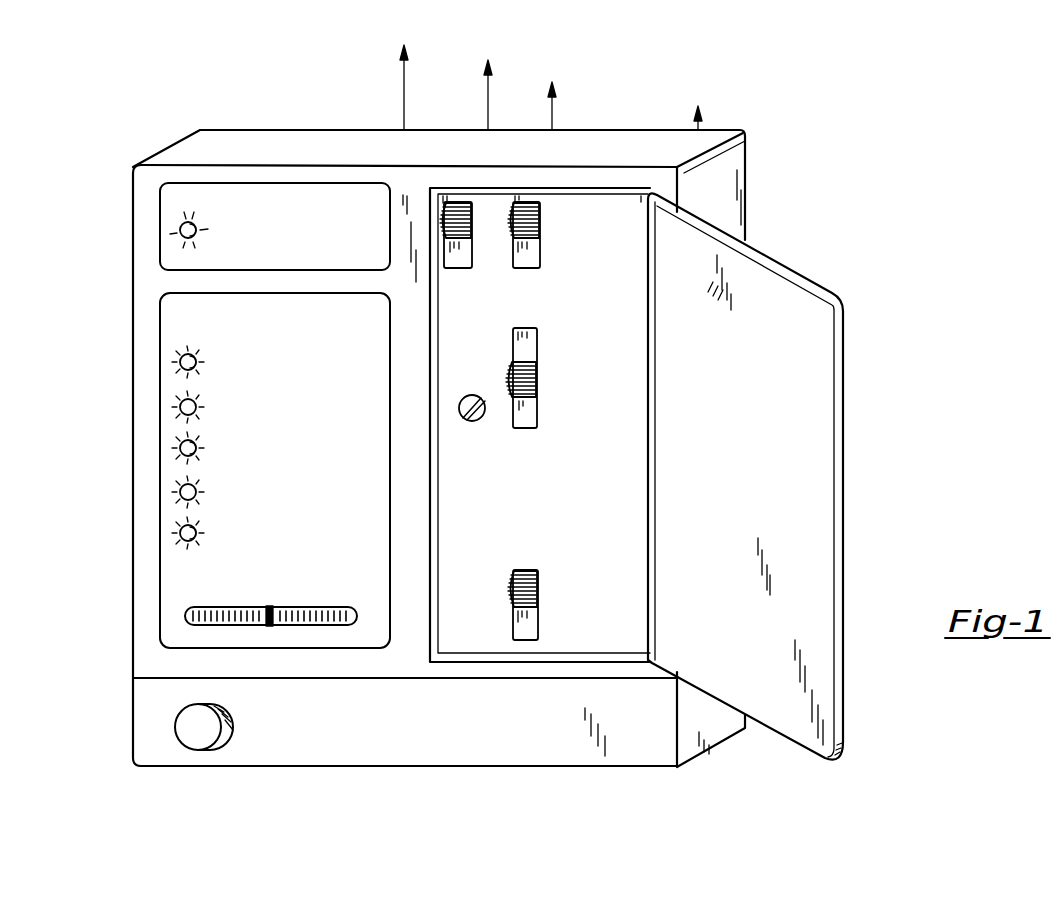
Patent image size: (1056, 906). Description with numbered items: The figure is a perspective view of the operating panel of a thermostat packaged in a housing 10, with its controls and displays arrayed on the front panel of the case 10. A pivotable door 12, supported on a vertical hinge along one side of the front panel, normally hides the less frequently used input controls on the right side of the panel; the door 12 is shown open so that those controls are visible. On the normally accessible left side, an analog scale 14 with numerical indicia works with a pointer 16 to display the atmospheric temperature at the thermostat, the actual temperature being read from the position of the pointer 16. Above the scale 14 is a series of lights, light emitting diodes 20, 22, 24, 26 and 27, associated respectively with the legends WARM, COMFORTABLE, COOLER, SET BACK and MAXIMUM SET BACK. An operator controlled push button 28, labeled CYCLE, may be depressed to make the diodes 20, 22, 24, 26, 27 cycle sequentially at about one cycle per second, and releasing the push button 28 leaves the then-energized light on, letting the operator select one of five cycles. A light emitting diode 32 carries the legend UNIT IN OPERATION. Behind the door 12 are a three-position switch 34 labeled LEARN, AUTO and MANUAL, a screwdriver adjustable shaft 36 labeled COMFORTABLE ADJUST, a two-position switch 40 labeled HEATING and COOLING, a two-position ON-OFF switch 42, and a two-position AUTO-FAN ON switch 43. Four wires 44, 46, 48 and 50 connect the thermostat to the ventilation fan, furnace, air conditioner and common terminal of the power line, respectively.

The housing 10 is at (118, 189).
The pivotable door 12 is at (787, 293).
The analog scale 14 is at (272, 604).
The pointer 16 is at (272, 626).
The light emitting diode 20 is at (180, 362).
The light emitting diode 22 is at (180, 407).
The light emitting diode 24 is at (180, 448).
The light emitting diode 26 is at (180, 492).
The light emitting diode 27 is at (180, 533).
The push button 28 is at (233, 726).
The light emitting diode 32 is at (180, 230).
The three-position switch 34 is at (508, 366).
The screwdriver adjustable shaft 36 is at (463, 397).
The two-position switch 40 is at (538, 207).
The ON-OFF switch 42 is at (458, 200).
The AUTO-FAN ON switch 43 is at (514, 572).
The wire 44 is at (404, 100).
The wire 46 is at (488, 105).
The wire 48 is at (552, 111).
The wire 50 is at (698, 118).